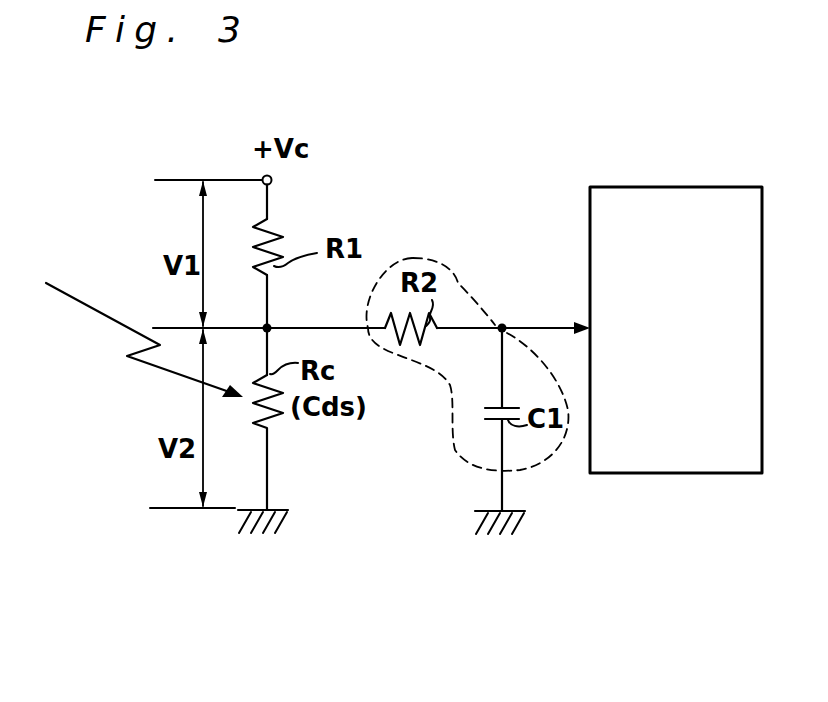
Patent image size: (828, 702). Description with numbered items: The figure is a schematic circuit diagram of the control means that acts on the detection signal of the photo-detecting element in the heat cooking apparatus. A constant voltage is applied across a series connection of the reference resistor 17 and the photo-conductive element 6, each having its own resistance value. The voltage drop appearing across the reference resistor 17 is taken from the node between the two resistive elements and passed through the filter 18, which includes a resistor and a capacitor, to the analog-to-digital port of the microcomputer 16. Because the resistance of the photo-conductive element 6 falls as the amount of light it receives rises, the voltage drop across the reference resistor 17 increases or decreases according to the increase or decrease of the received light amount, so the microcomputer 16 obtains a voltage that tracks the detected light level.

The reference resistor 17 is at (279, 228).
The photo-conductive element 6 is at (270, 423).
The filter 18 is at (458, 283).
The microcomputer 16 is at (660, 202).